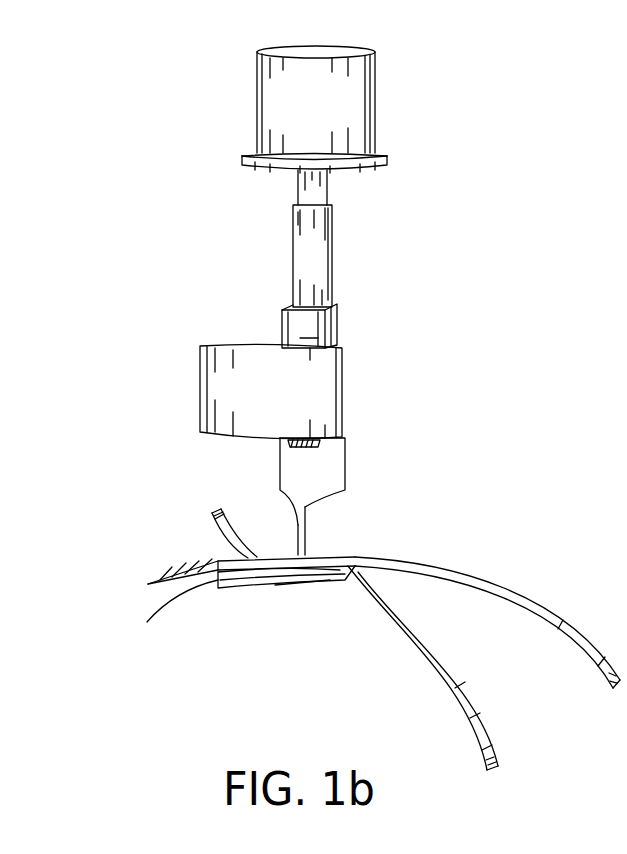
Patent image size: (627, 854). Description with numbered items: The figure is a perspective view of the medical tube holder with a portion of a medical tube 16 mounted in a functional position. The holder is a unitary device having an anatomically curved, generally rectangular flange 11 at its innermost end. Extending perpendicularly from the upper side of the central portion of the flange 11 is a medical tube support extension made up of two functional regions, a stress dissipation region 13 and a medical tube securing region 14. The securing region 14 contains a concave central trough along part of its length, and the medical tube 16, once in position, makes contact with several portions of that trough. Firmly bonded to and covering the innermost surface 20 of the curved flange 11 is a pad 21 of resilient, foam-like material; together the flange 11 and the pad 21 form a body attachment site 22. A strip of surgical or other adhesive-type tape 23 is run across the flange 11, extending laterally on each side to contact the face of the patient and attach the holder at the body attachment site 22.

The curved flange 11 is at (205, 566).
The stress dissipation region 13 is at (305, 532).
The medical tube securing region 14 is at (322, 463).
The medical tube 16 is at (308, 255).
The innermost surface 20 is at (173, 619).
The pad 21 is at (232, 589).
The body attachment site 22 is at (302, 592).
The adhesive-type tape 23 is at (525, 597).